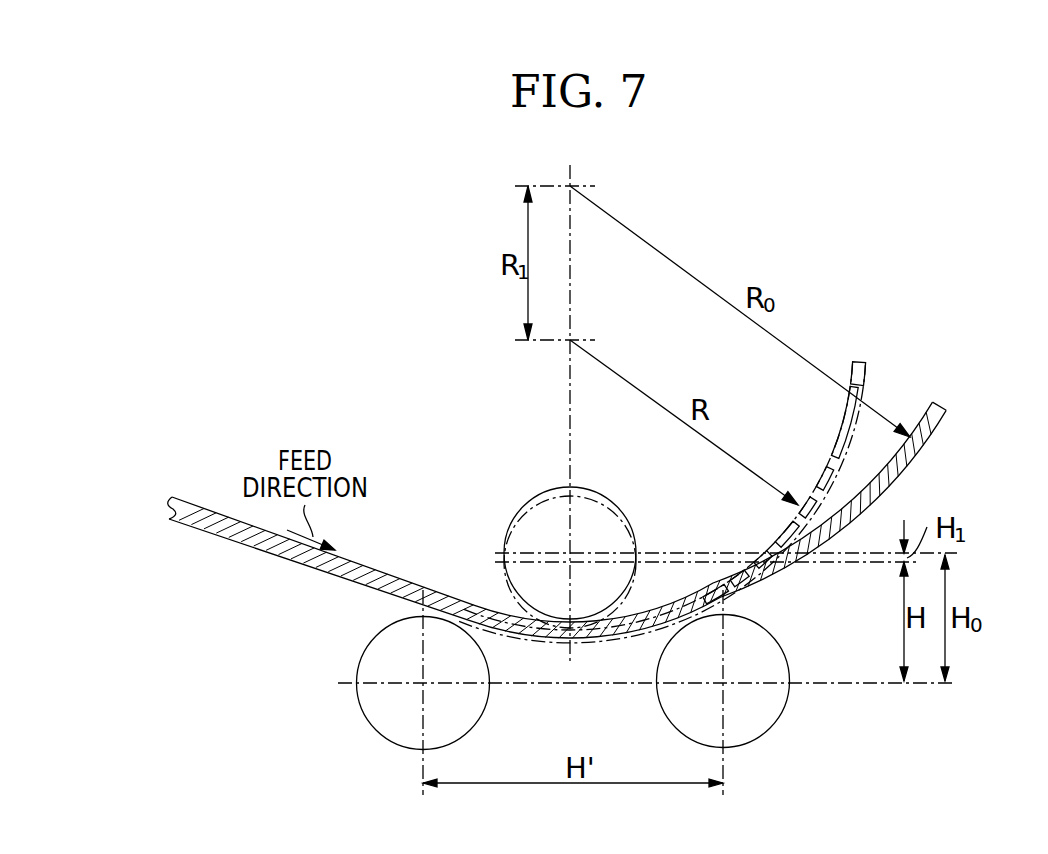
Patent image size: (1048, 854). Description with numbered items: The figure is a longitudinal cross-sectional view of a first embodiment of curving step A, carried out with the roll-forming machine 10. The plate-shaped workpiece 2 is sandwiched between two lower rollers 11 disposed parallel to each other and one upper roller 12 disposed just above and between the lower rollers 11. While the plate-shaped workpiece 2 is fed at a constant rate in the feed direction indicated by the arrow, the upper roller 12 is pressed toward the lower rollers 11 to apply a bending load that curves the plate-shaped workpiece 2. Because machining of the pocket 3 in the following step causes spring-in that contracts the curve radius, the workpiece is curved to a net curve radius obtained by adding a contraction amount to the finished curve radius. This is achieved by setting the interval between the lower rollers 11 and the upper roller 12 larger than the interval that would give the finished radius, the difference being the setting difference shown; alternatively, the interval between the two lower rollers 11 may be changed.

The curving step A is at (325, 318).
The plate-shaped workpiece 2 is at (588, 498).
The pocket 3 is at (845, 428).
The roll-forming machine 10 is at (342, 635).
The lower rollers 11 is at (372, 720).
The upper roller 12 is at (517, 520).